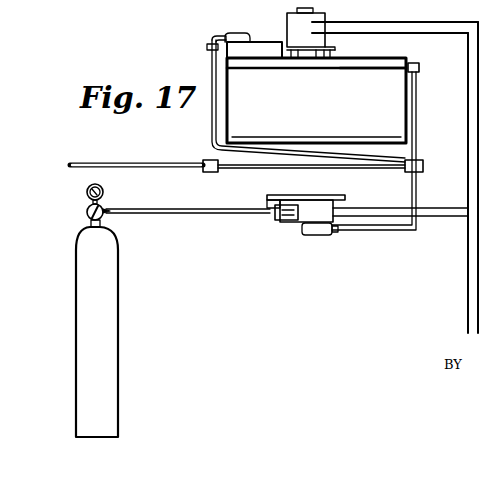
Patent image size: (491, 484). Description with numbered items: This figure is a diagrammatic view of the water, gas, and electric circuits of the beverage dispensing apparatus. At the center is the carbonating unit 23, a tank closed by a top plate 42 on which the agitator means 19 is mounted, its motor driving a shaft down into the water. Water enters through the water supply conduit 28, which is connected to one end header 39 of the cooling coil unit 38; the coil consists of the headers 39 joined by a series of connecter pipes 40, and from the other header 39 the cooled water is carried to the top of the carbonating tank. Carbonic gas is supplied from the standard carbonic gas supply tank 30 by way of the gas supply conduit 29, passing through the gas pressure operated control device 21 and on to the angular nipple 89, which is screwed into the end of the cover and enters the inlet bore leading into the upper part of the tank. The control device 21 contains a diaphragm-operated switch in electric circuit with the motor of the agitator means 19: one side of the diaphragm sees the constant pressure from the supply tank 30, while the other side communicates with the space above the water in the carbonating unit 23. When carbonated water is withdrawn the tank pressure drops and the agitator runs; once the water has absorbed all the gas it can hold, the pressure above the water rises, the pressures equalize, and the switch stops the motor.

The agitator means 19 is at (286, 25).
The gas pressure operated control device 21 is at (333, 194).
The carbonating unit 23 is at (315, 88).
The water supply conduit 28 is at (156, 163).
The gas supply conduit 29 is at (417, 141).
The carbonic gas supply tank 30 is at (86, 297).
The cooling coil unit 38 is at (237, 171).
The headers 39 is at (202, 160).
The connecter pipes 40 is at (268, 169).
The closure means or top plate 42 is at (364, 62).
The angular nipple 89 is at (425, 61).